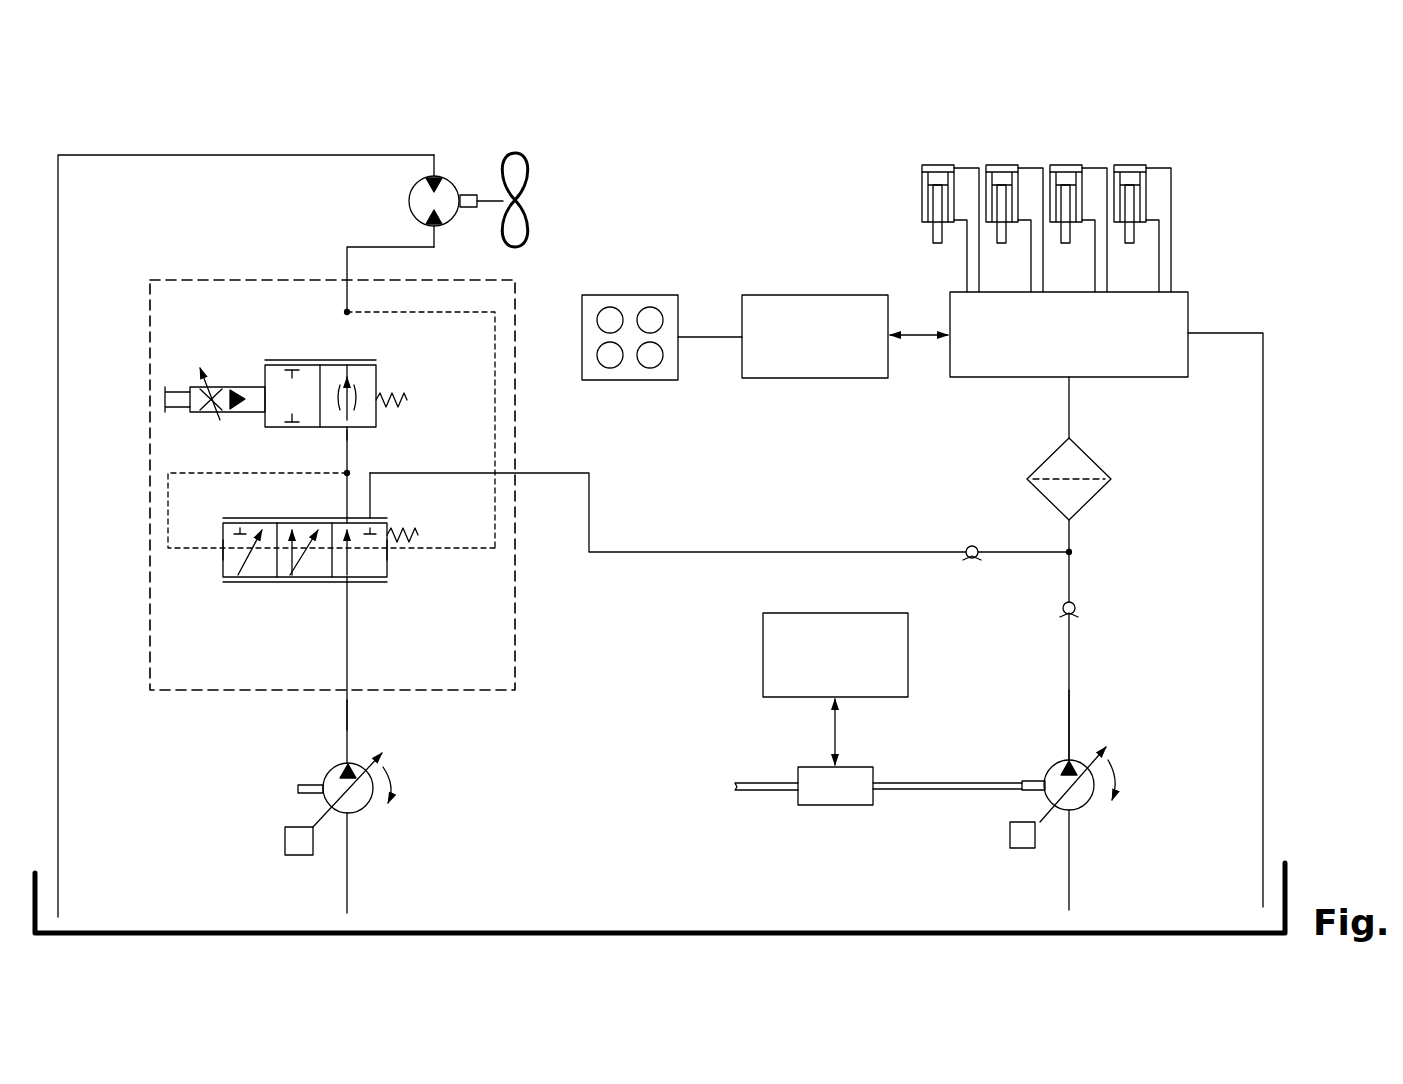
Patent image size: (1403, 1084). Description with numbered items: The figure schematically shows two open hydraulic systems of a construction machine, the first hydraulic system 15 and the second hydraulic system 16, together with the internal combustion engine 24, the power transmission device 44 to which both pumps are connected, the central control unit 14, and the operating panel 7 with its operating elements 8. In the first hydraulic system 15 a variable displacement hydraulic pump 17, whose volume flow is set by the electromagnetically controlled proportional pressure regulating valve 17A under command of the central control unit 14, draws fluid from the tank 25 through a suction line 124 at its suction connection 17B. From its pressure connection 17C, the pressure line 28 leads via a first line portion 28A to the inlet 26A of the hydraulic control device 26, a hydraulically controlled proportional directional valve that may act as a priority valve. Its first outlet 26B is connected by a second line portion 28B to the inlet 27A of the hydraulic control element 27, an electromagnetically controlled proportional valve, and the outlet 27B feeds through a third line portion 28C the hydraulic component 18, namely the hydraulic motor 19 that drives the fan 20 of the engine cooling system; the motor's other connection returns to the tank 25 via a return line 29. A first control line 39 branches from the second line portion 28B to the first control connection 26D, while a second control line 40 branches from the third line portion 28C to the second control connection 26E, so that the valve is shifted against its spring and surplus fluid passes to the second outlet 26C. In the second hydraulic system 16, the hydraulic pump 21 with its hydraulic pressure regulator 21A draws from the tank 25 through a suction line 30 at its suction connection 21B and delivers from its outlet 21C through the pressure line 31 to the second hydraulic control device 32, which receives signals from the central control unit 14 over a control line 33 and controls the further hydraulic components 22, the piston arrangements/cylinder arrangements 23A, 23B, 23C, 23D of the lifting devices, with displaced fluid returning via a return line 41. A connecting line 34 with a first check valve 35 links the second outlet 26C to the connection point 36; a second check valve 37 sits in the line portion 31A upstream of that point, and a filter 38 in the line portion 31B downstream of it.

The operating panel 7 is at (630, 382).
The operating elements 8 is at (650, 360).
The central control unit 14 is at (810, 383).
The first hydraulic system 15 is at (331, 437).
The second hydraulic system 16 is at (1132, 643).
The hydraulic pump 17 is at (320, 797).
The proportional pressure regulating valve 17A is at (285, 842).
The suction connection 17B is at (352, 814).
The pressure connection 17C is at (340, 772).
The hydraulic component 18 is at (428, 153).
The hydraulic motor 19 is at (408, 199).
The fan 20 is at (515, 150).
The hydraulic pump 21 is at (1038, 793).
The hydraulic pressure regulator 21A is at (1010, 836).
The suction connection 21B is at (1076, 808).
The outlet 21C is at (1062, 770).
The further hydraulic components 22 is at (1033, 176).
The piston arrangement/cylinder arrangement 23A is at (932, 162).
The piston arrangement/cylinder arrangement 23B is at (996, 162).
The piston arrangement/cylinder arrangement 23C is at (1060, 162).
The piston arrangement/cylinder arrangement 23D is at (1124, 162).
The internal combustion engine 24 is at (912, 660).
The tank 25 is at (512, 893).
The hydraulic control device 26 is at (332, 577).
The inlet 26A is at (340, 585).
The first outlet 26B is at (344, 516).
The second outlet 26C is at (373, 512).
The first control connection 26D is at (222, 550).
The second control connection 26E is at (389, 550).
The hydraulic control element 27 is at (310, 378).
The inlet 27A is at (342, 438).
The outlet 27B is at (352, 364).
The pressure line 28 is at (338, 713).
The first line portion 28A is at (350, 708).
The second line portion 28B is at (350, 446).
The third line portion 28C is at (345, 256).
The return line 29 is at (60, 762).
The suction line 30 is at (1072, 852).
The pressure line 31 is at (1073, 676).
The line portion 31A is at (1072, 713).
The line portion 31B is at (1072, 404).
The second hydraulic control device 32 is at (1193, 312).
The control line 33 is at (915, 346).
The connecting line 34 is at (720, 550).
The first check valve 35 is at (970, 545).
The connection point 36 is at (1073, 552).
The second check valve 37 is at (1077, 607).
The filter 38 is at (1098, 459).
The first control line 39 is at (290, 577).
The second control line 40 is at (331, 485).
The return line 41 is at (1265, 600).
The power transmission device 44 is at (833, 808).
The suction line 124 is at (350, 857).